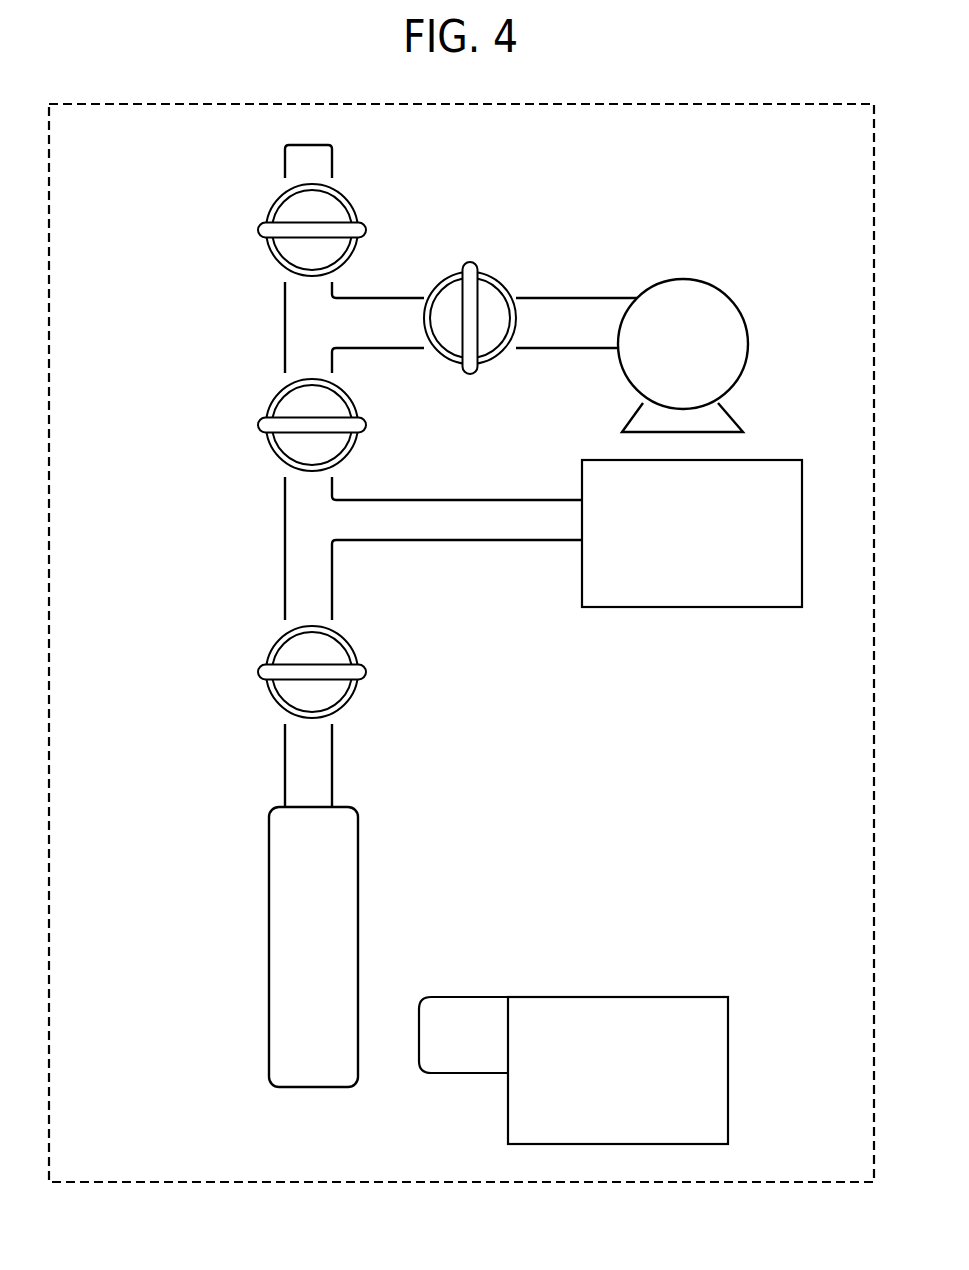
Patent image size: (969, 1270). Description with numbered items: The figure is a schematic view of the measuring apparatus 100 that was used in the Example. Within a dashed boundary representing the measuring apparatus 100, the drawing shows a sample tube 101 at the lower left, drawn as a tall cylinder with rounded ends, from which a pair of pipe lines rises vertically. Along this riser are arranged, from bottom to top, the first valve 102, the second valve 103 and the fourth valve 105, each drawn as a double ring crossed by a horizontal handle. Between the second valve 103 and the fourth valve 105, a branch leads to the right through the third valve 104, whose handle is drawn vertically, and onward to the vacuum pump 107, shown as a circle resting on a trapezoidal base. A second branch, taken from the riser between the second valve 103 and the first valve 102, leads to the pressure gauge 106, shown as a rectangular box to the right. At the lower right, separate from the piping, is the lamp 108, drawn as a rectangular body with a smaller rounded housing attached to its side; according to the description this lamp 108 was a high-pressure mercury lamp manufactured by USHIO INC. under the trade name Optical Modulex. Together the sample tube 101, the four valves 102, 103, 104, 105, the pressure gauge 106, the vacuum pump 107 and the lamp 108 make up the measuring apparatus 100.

The measuring apparatus 100 is at (760, 104).
The sample tube 101 is at (268, 913).
The first valve 102 is at (258, 672).
The second valve 103 is at (260, 422).
The third valve 104 is at (485, 363).
The fourth valve 105 is at (262, 242).
The pressure gauge 106 is at (700, 597).
The vacuum pump 107 is at (681, 302).
The lamp 108 is at (577, 997).